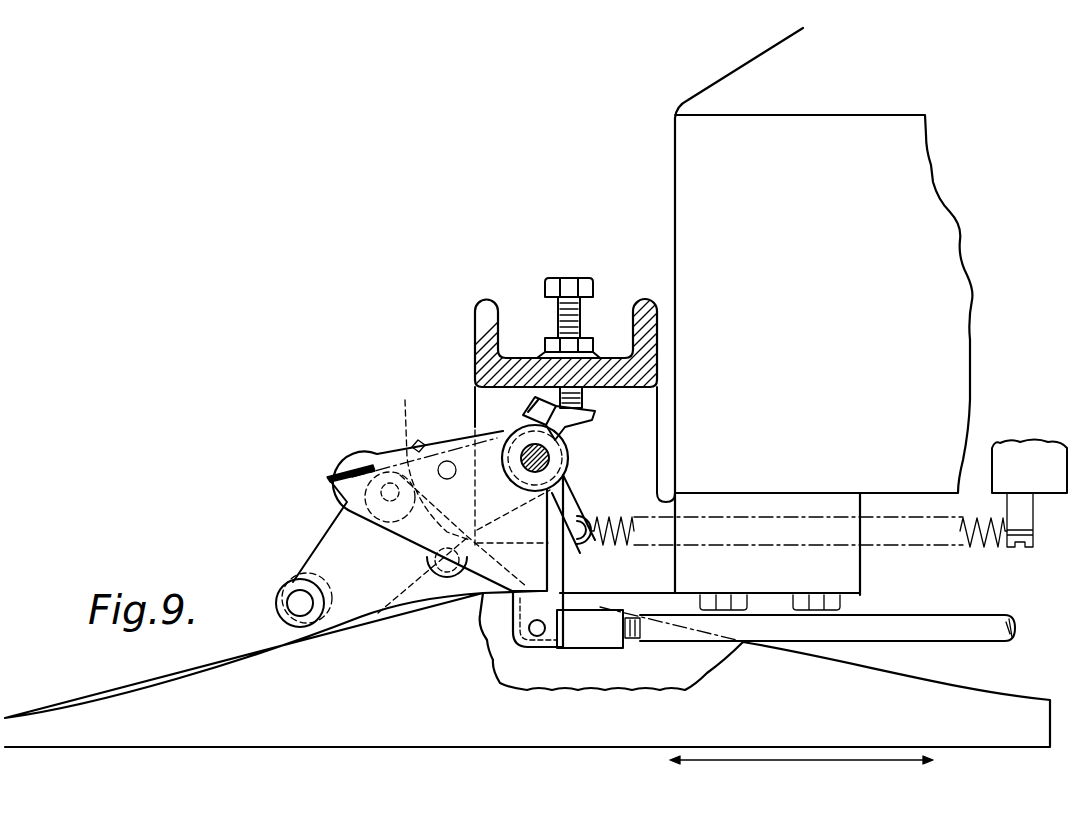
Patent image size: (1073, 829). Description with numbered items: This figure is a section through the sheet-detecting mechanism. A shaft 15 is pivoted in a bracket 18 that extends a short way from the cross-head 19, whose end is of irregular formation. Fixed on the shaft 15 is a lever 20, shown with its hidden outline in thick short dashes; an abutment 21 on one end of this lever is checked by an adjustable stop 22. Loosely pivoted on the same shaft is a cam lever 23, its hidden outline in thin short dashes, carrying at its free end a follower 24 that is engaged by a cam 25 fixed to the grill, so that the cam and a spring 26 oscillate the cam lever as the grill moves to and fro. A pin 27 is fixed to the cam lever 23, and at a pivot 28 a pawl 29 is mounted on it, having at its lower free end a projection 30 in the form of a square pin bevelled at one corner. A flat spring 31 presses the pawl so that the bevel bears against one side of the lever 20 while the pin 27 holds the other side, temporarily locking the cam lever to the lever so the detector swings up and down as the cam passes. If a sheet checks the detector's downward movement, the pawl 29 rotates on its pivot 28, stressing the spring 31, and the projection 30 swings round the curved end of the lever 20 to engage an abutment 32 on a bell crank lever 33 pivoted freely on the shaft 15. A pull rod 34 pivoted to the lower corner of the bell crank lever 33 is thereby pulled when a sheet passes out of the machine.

The shaft 15 is at (549, 457).
The bracket 18 is at (490, 307).
The cross-head 19 is at (683, 163).
The lever 20 is at (476, 432).
The abutment 21 is at (578, 416).
The adjustable stop 22 is at (573, 312).
The cam lever 23 is at (307, 567).
The follower 24 is at (278, 603).
The cam 25 is at (114, 706).
The spring 26 is at (960, 527).
The pin 27 is at (447, 460).
The pivot 28 is at (375, 457).
The pawl 29 is at (437, 573).
The projection 30 is at (410, 594).
The flat spring 31 is at (330, 477).
The abutment 32 is at (405, 389).
The bell crank lever 33 is at (577, 487).
The pull rod 34 is at (892, 627).